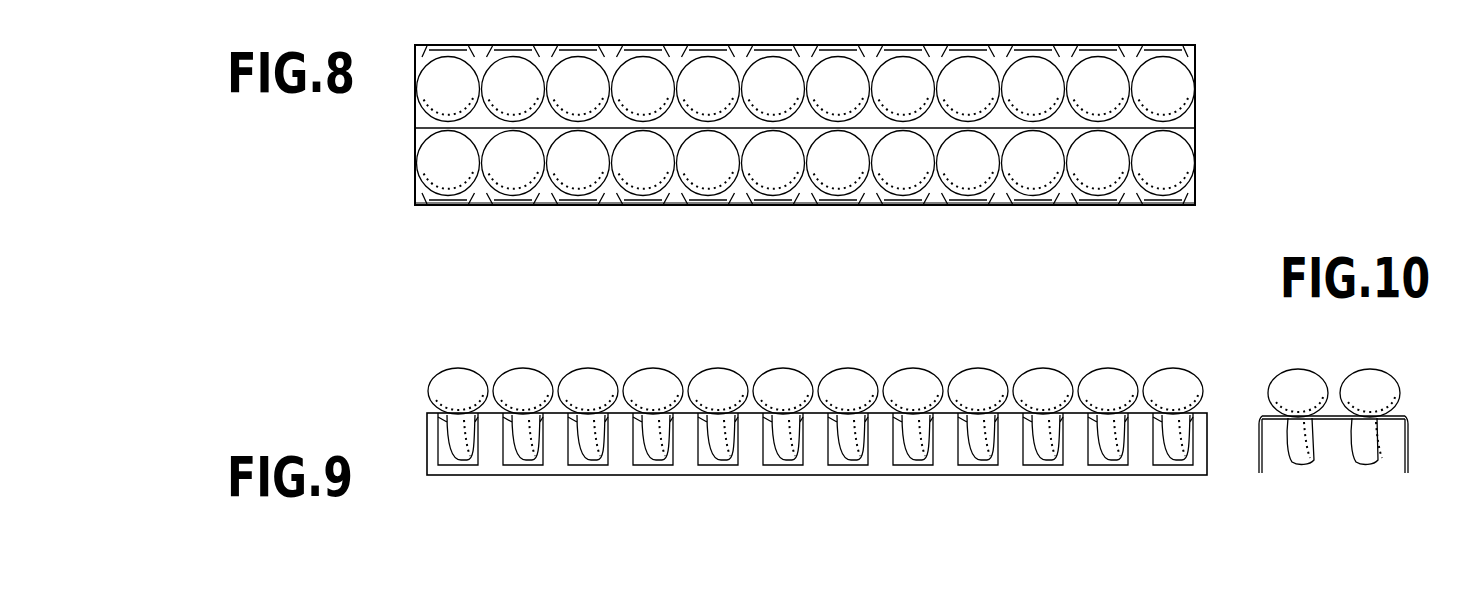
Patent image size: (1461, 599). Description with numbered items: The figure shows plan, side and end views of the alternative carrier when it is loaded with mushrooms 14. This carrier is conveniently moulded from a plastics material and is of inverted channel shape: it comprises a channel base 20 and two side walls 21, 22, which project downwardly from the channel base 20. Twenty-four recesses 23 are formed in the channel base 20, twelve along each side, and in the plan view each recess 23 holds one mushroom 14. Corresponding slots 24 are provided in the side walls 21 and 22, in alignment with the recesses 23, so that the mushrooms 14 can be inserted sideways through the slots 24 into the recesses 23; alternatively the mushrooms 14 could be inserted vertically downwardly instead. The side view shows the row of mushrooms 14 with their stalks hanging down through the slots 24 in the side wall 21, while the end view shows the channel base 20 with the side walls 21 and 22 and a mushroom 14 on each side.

In FIG. 8, the mushroom 14 is at (835, 173).
In FIG. 9, the mushroom 14 is at (968, 380).
In FIG. 8, the channel base 20 is at (1185, 123).
In FIG. 10, the channel base 20 is at (1328, 418).
In FIG. 8, the side wall 21 is at (1064, 205).
In FIG. 10, the side wall 21 is at (1258, 450).
In FIG. 10, the side wall 22 is at (1407, 457).
In FIG. 8, the recess 23 is at (1099, 197).
In FIG. 9, the slot 24 is at (700, 440).